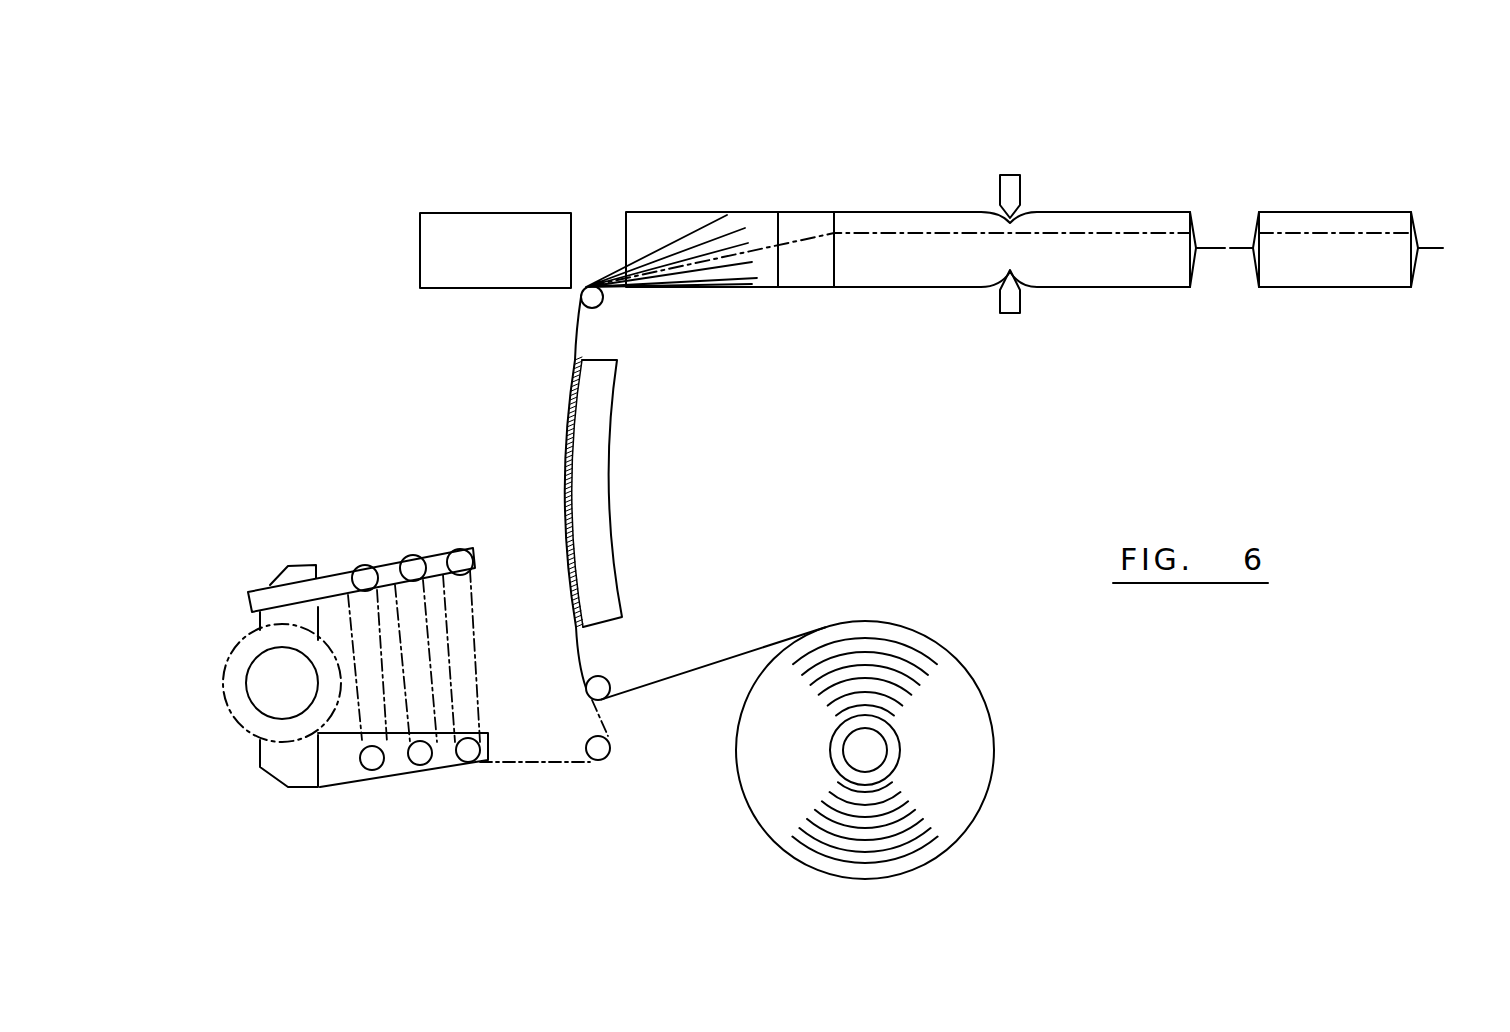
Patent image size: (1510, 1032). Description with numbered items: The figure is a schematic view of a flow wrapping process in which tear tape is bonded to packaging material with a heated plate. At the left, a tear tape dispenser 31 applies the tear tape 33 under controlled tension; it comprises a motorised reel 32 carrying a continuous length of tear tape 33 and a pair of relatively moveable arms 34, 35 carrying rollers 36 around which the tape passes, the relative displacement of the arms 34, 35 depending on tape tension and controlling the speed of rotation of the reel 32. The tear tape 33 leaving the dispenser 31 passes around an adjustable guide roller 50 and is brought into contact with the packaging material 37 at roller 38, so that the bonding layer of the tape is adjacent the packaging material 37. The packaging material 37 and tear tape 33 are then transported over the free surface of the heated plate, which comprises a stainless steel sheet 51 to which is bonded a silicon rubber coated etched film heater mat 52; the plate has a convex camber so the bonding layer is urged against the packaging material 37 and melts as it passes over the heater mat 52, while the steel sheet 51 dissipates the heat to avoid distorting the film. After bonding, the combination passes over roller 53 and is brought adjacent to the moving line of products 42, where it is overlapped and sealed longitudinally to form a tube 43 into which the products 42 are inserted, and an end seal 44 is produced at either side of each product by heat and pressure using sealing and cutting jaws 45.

The tear tape dispenser 31 is at (399, 548).
The motorised reel 32 is at (280, 683).
The tear tape 33 is at (915, 233).
The arm 34 is at (328, 586).
The arm 35 is at (340, 760).
The rollers 36 is at (460, 562).
The packaging material 37 is at (702, 665).
The roller 38 is at (605, 680).
The products 42 is at (477, 269).
The tube 43 is at (803, 218).
The end seal 44 is at (1418, 247).
The sealing and cutting jaws 45 is at (1010, 198).
The adjustable guide roller 50 is at (597, 752).
The stainless steel sheet 51 is at (565, 422).
The heater mat 52 is at (600, 413).
The roller 53 is at (592, 286).